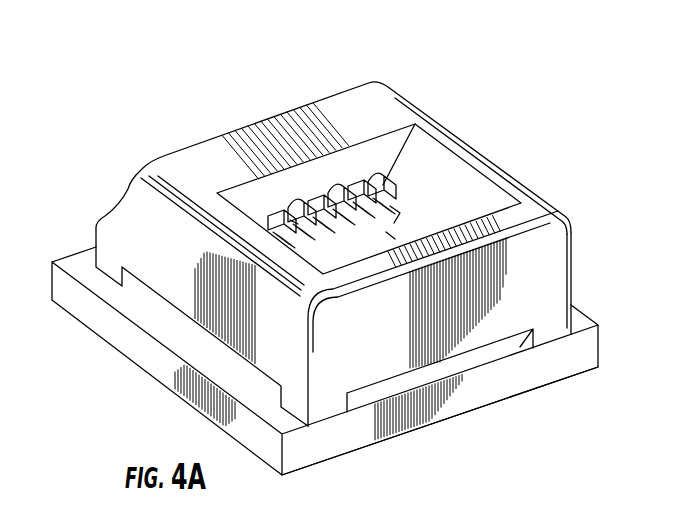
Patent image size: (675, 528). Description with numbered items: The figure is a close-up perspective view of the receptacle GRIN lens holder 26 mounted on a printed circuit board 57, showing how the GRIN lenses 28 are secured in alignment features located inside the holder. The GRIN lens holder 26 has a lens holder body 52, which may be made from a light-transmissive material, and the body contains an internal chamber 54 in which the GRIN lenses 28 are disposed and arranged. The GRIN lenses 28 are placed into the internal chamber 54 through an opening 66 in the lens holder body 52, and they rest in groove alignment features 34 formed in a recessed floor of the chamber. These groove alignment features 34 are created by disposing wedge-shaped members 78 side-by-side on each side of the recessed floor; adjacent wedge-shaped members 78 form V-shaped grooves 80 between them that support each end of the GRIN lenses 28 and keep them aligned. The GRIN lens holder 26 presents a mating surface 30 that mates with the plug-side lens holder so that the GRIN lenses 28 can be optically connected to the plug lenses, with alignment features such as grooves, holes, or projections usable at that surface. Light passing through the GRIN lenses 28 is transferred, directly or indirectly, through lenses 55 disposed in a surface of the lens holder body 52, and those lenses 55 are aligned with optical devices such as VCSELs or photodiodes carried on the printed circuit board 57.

The GRIN lens holder 26 is at (435, 70).
The GRIN lenses 28 is at (393, 238).
The mating surface 30 is at (570, 279).
The groove alignment features 34 is at (262, 214).
The lens holder body 52 is at (540, 208).
The internal chamber 54 is at (430, 201).
The lenses 55 is at (133, 295).
The printed circuit board 57 is at (313, 455).
The opening 66 is at (452, 161).
The wedge-shaped members 78 is at (361, 216).
The V-shaped grooves 80 is at (291, 203).